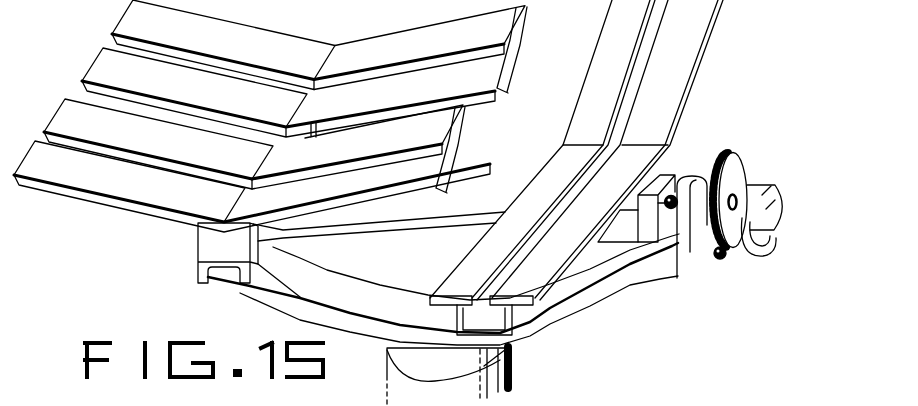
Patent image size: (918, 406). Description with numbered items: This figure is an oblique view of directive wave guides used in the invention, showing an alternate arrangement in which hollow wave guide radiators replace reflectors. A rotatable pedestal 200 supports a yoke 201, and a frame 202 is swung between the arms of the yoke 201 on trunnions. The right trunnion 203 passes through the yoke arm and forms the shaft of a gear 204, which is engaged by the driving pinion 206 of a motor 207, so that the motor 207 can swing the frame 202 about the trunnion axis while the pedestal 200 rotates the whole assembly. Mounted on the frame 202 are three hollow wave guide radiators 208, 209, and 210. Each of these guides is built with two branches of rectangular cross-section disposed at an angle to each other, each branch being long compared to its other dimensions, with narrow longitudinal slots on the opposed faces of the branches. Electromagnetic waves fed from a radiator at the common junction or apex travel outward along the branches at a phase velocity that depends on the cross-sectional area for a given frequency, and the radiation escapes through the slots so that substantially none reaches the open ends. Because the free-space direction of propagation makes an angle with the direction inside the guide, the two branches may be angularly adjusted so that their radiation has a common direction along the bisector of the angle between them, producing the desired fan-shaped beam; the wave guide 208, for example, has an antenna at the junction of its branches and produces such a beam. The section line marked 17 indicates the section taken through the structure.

The section line 17- 17 is at (97, 36).
The rotatable pedestal 200 is at (510, 347).
The yoke 201 is at (612, 322).
The frame 202 is at (388, 233).
The right trunnion 203 is at (677, 194).
The gear 204 is at (741, 173).
The driving pinion 206 is at (717, 260).
The motor 207 is at (767, 250).
The hollow wave guide radiator 208 is at (458, 146).
The hollow wave guide radiator 209 is at (511, 90).
The hollow wave guide radiator 210 is at (692, 88).